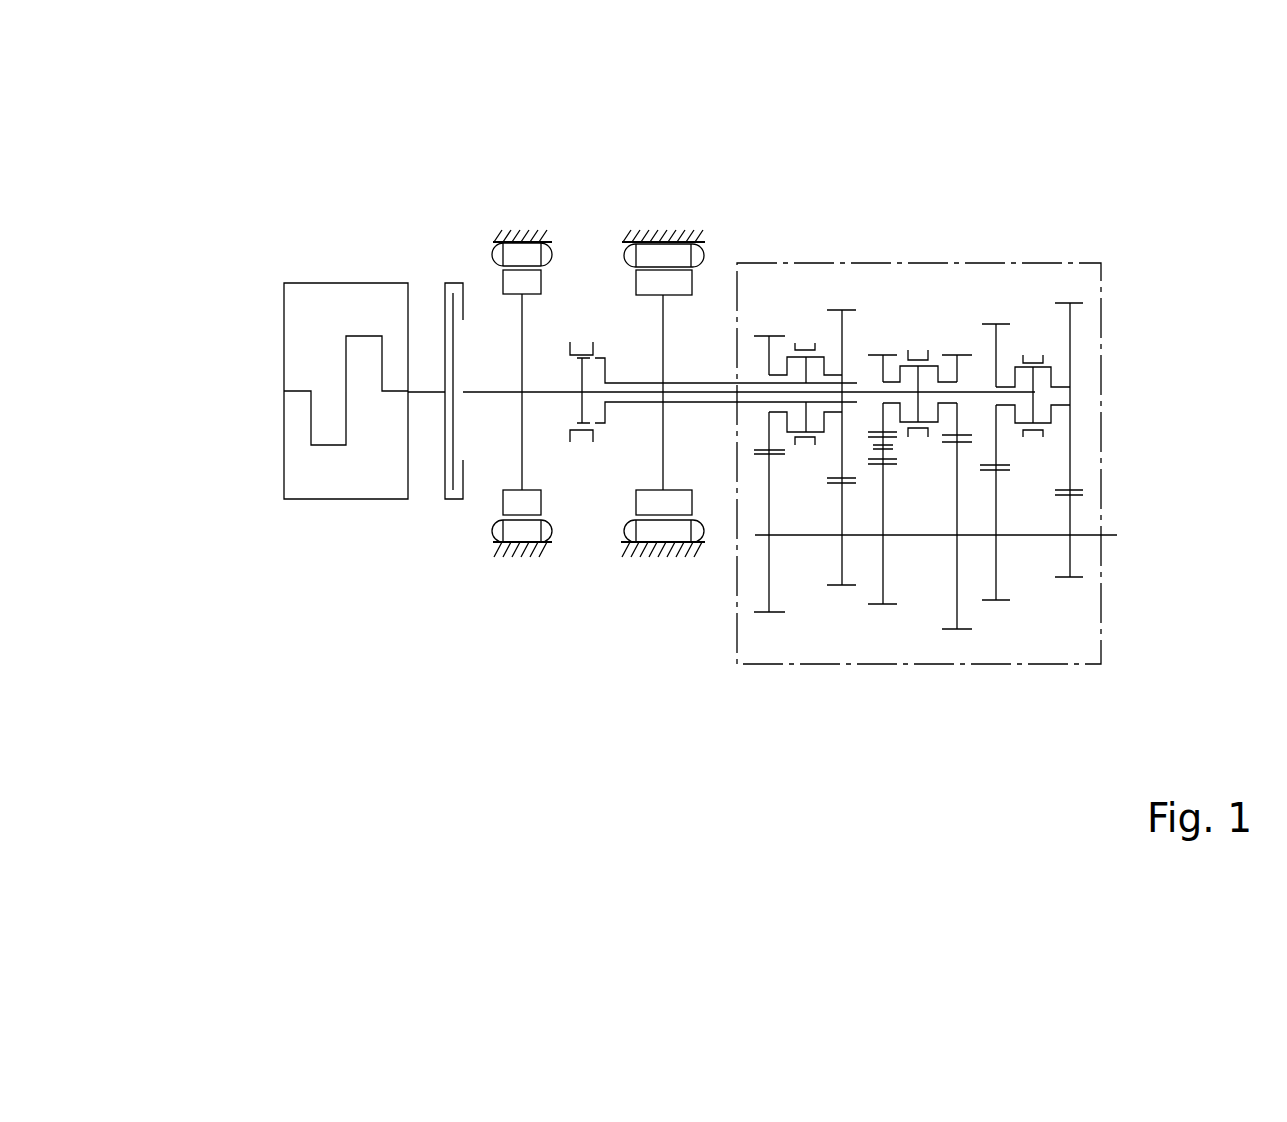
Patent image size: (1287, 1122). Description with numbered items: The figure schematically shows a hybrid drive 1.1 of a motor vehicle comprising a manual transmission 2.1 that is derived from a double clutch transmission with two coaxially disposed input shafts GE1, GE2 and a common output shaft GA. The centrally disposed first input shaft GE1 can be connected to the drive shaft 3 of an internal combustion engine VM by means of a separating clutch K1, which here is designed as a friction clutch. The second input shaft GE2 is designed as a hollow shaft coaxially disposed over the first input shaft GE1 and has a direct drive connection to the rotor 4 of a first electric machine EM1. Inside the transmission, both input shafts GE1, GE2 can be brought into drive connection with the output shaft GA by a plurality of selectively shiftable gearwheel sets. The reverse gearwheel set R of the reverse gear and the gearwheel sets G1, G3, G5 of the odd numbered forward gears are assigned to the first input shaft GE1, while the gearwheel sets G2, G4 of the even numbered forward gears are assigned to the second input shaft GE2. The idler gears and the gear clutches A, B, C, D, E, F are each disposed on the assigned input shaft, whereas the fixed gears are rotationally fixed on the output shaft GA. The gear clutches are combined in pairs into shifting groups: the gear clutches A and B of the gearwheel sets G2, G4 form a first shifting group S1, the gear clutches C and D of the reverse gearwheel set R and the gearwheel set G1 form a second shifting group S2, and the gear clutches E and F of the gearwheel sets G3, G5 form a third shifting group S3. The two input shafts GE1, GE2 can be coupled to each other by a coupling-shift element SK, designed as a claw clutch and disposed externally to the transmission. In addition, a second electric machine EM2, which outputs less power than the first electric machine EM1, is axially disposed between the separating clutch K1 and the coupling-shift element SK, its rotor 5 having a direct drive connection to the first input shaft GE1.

The hybrid drive 1.1 is at (375, 662).
The manual transmission 2.1 is at (832, 670).
The drive shaft 3 is at (425, 388).
The rotor 4 is at (650, 502).
The rotor 5 is at (522, 502).
The internal combustion engine VM is at (342, 303).
The separating clutch K1 is at (450, 268).
The first electric machine EM1 is at (679, 220).
The second electric machine EM2 is at (522, 220).
The coupling-shift element SK is at (584, 328).
The first input shaft GE1 is at (703, 383).
The second input shaft GE2 is at (713, 403).
The output shaft GA is at (1025, 537).
The gearwheel set G1 is at (957, 647).
The gearwheel set G2 is at (768, 312).
The gearwheel set G3 is at (996, 305).
The gearwheel set G4 is at (842, 290).
The gearwheel set G5 is at (1070, 283).
The reverse gearwheel set R is at (883, 617).
The first shifting group S1 is at (805, 411).
The second shifting group S2 is at (918, 412).
The third shifting group S3 is at (1032, 416).
The gear clutch A is at (785, 378).
The gear clutch B is at (827, 378).
The gear clutch C is at (899, 373).
The gear clutch D is at (940, 373).
The gear clutch E is at (1012, 374).
The gear clutch F is at (1054, 374).